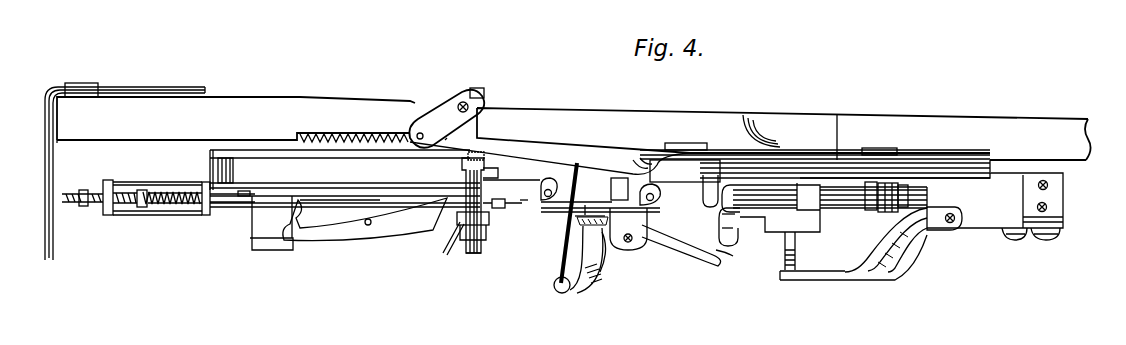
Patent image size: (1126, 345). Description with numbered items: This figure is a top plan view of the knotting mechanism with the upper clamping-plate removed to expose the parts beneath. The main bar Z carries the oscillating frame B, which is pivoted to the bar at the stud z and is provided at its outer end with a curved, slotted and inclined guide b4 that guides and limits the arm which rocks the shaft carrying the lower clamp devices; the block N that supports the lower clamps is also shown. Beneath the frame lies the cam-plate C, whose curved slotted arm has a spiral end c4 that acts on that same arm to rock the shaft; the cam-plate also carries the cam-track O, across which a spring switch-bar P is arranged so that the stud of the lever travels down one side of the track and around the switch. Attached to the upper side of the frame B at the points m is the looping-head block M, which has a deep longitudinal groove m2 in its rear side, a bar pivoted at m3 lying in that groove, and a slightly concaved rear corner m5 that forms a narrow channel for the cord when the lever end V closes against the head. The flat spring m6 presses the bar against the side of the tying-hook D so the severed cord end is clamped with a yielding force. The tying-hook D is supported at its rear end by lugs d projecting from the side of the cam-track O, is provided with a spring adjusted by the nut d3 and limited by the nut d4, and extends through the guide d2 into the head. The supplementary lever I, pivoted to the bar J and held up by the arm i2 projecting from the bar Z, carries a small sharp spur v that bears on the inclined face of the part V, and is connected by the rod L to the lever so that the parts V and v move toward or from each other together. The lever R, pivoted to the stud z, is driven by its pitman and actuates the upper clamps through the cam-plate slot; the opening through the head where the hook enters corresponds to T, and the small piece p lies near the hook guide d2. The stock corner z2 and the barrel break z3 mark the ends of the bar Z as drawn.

The bar Z is at (236, 119).
The stock corner z2 is at (64, 149).
The barrel break z3 is at (788, 143).
The pivot stud z is at (480, 88).
The arm i2 is at (442, 136).
The pivoted plate or bar J is at (446, 119).
The cam-plate C is at (375, 178).
The cam-track O is at (351, 223).
The spring switch-bar P is at (365, 219).
The tying-hook D is at (340, 199).
The lugs d is at (158, 206).
The guide d2 is at (502, 194).
The nut d3 is at (145, 190).
The nut d4 is at (84, 190).
The lever R is at (456, 170).
The mark T is at (475, 157).
The rod p is at (523, 204).
The rod L is at (560, 228).
The flat spring m6 is at (610, 258).
The attachment points m is at (602, 185).
The looping-head M is at (614, 207).
The flattened inclined end V is at (693, 245).
The spur v is at (703, 185).
The groove m2 is at (720, 212).
The pivot m3 is at (715, 230).
The concave m5 is at (619, 216).
The block N is at (824, 231).
The oscillating frame or plate B is at (931, 200).
The curved slotted inclined guide b4 is at (1044, 238).
The curved spiral slot end c4 is at (912, 238).
The supplementary lever I is at (550, 158).